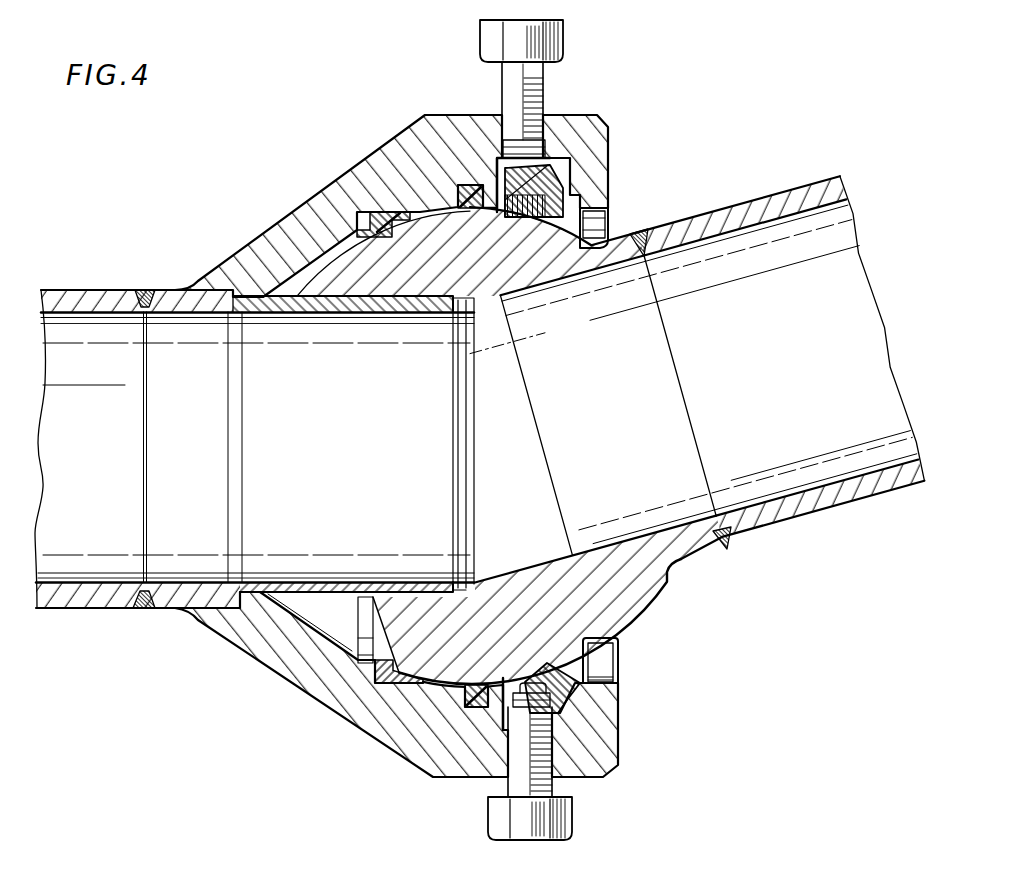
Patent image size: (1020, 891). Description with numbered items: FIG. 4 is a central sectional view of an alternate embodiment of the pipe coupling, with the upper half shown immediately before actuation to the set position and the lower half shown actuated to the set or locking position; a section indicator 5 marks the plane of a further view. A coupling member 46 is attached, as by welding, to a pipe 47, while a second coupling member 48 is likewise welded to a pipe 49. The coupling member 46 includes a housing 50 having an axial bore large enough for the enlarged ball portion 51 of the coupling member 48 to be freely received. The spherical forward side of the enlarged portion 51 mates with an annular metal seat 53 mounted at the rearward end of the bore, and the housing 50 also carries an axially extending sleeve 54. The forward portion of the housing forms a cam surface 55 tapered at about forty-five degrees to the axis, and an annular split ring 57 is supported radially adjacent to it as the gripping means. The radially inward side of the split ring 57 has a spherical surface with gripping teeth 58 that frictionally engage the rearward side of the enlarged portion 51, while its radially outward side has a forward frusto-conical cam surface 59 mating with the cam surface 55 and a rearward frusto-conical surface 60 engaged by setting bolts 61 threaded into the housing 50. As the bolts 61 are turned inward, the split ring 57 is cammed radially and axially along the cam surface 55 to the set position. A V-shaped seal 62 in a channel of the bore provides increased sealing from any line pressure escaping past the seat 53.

The coupling member 46 is at (299, 200).
The pipe 47 is at (88, 287).
The coupling member 48 is at (694, 556).
The pipe 49 is at (835, 514).
The housing 50 is at (397, 153).
The enlarged ball portion 51 is at (437, 270).
The annular metal seat 53 is at (375, 210).
The sleeve 54 is at (302, 307).
The cam surface 55 is at (582, 213).
The annular split ring 57 is at (528, 188).
The gripping teeth 58 is at (532, 214).
The forward frusto-conical cam surface 59 is at (506, 151).
The rearward frusto-conical surface 60 is at (501, 186).
The setting bolts 61 is at (565, 37).
The V-shaped seal 62 is at (460, 187).
The section line for FIG. 5 is at (522, 463).